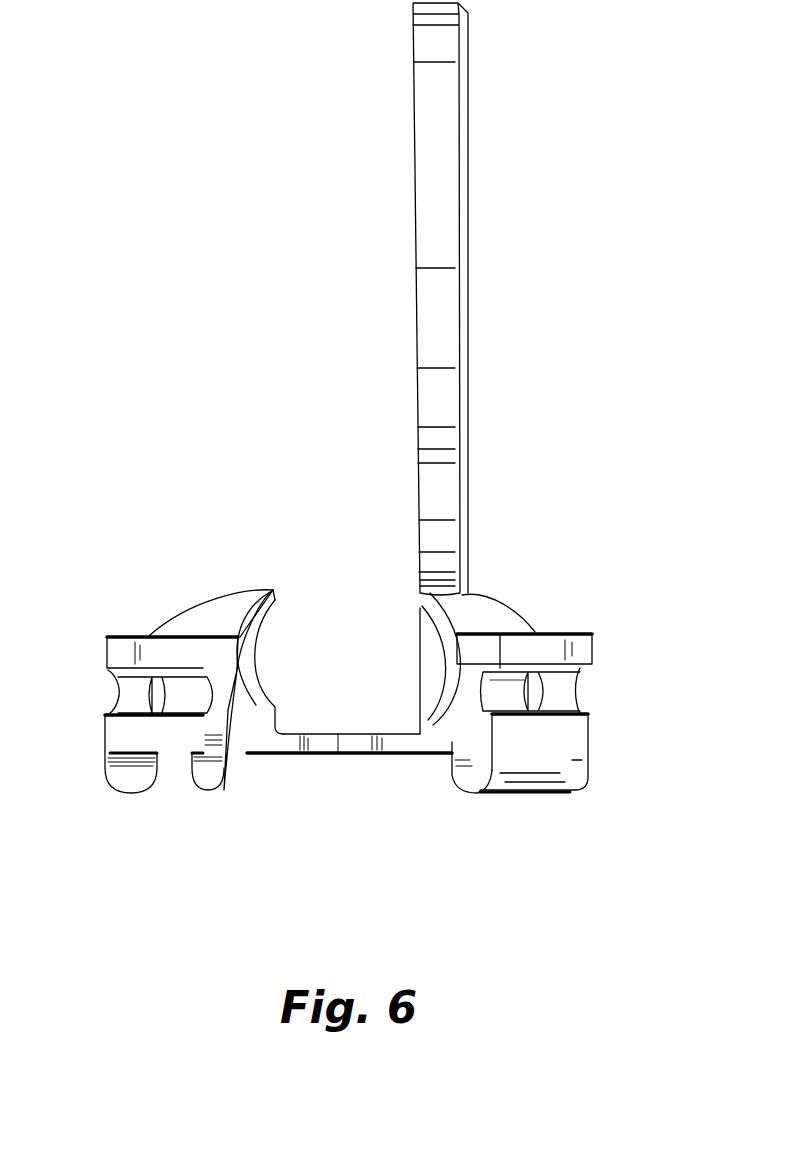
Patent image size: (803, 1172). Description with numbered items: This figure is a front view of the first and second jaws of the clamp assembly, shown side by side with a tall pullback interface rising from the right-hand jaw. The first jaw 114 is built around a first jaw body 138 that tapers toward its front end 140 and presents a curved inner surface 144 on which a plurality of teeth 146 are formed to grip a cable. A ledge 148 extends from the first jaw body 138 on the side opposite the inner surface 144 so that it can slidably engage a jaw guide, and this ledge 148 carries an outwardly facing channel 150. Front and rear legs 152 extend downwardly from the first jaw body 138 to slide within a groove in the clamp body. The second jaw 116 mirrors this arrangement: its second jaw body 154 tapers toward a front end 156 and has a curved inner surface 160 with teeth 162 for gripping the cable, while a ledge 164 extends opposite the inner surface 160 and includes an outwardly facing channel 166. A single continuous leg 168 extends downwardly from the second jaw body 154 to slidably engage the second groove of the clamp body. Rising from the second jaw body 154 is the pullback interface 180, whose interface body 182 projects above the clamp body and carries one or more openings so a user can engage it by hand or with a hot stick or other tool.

The first jaw 114 is at (181, 624).
The second jaw 116 is at (537, 616).
The first jaw body 138 is at (215, 610).
The front end 140 is at (235, 728).
The curved inner surface 144 is at (262, 702).
The teeth 146 is at (258, 667).
The ledge 148 is at (113, 652).
The outwardly facing channel 150 is at (120, 698).
The legs 152 is at (130, 782).
The second jaw body 154 is at (488, 605).
The front end 156 is at (470, 790).
The curved inner surface 160 is at (443, 686).
The teeth 162 is at (428, 655).
The ledge 164 is at (587, 648).
The outwardly facing channel 166 is at (570, 693).
The leg 168 is at (573, 760).
The pullback interface 180 is at (407, 218).
The interface body 182 is at (445, 397).